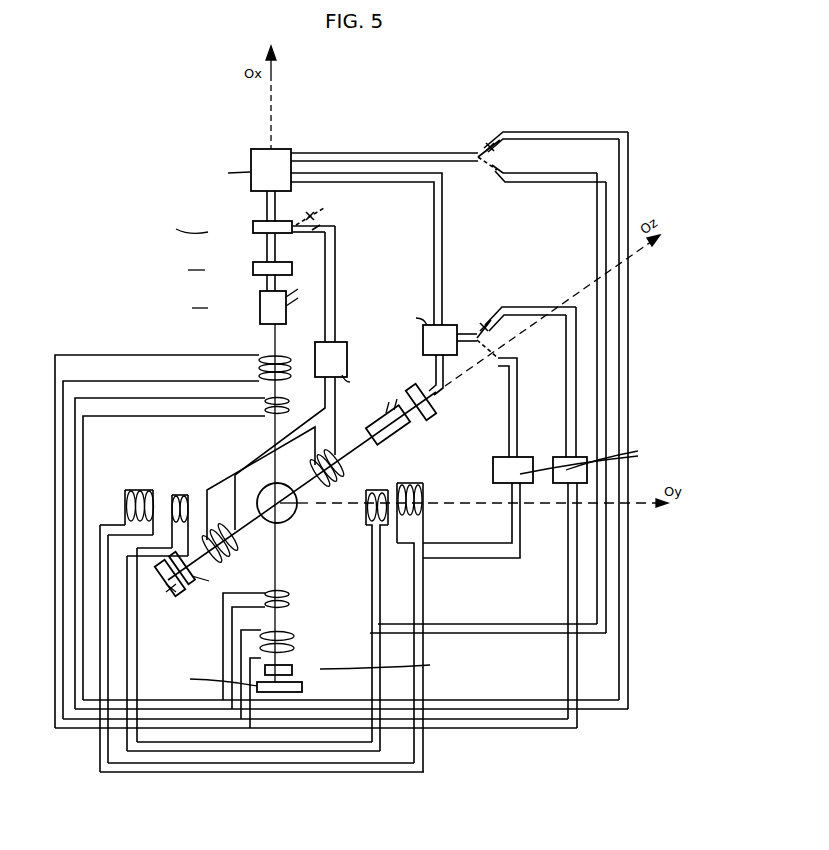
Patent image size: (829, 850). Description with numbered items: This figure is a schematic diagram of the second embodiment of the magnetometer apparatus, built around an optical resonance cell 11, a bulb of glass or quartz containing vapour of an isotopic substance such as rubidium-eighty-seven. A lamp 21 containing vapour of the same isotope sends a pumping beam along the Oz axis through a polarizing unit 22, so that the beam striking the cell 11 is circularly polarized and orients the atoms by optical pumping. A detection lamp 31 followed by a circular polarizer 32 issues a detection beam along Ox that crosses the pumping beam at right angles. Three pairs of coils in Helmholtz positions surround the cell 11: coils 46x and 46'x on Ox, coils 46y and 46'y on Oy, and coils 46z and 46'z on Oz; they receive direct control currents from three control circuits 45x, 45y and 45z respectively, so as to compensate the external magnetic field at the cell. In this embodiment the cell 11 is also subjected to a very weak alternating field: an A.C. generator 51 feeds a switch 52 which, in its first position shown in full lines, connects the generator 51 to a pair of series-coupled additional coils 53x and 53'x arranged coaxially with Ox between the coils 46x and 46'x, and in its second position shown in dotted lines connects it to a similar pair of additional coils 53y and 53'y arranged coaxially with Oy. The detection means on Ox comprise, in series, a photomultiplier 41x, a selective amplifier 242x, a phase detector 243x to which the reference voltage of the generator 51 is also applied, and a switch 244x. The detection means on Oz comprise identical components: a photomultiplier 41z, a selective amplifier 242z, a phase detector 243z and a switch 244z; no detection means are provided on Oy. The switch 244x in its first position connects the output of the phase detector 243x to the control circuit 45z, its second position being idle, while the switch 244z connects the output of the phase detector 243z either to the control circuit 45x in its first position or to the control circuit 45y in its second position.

The A.C. generator 51 is at (287, 151).
The switch 52 is at (481, 152).
The phase detector 243x is at (253, 229).
The switch 244x is at (321, 217).
The selective amplifier 242x is at (253, 269).
The photomultiplier 41x is at (260, 306).
The coil 46x is at (277, 356).
The additional coil 53x is at (286, 405).
The control circuit 45z is at (343, 354).
The phase detector 243z is at (395, 341).
The switch 244z is at (515, 382).
The optical resonance cell 11 is at (290, 513).
The coil 46z is at (334, 466).
The coil 46'z is at (232, 543).
The photomultiplier 41z is at (413, 430).
The selective amplifier 242z is at (454, 406).
The lamp 21 is at (167, 588).
The polarizing unit 22 is at (187, 577).
The coil 46'y is at (124, 486).
The additional coil 53'y is at (161, 497).
The additional coil 53y is at (374, 612).
The coil 46y is at (423, 487).
The control circuit 45y is at (494, 463).
The control circuit 45x is at (554, 463).
The additional coil 53'x is at (279, 648).
The coil 46'x is at (291, 679).
The circular polarizer 32 is at (292, 670).
The detection lamp 31 is at (302, 688).